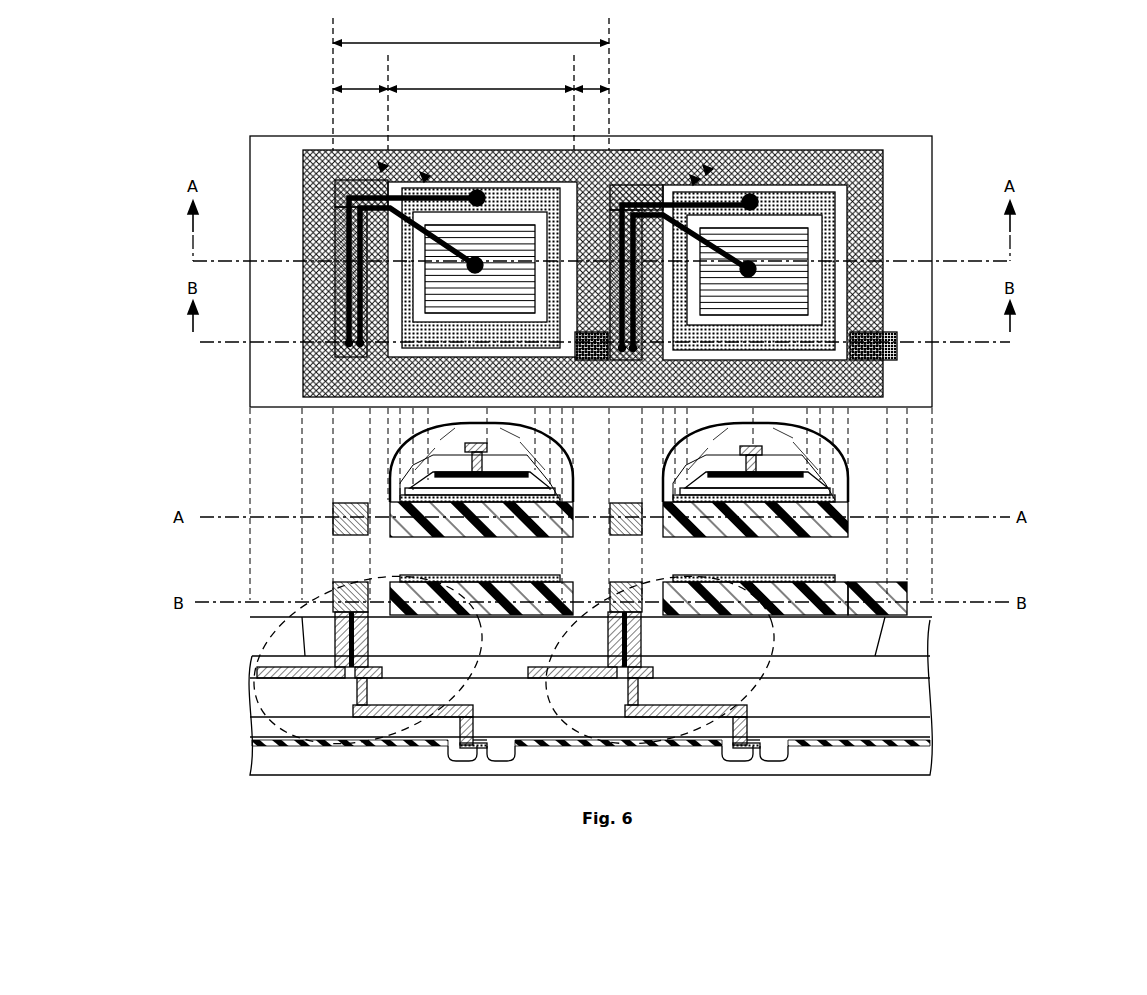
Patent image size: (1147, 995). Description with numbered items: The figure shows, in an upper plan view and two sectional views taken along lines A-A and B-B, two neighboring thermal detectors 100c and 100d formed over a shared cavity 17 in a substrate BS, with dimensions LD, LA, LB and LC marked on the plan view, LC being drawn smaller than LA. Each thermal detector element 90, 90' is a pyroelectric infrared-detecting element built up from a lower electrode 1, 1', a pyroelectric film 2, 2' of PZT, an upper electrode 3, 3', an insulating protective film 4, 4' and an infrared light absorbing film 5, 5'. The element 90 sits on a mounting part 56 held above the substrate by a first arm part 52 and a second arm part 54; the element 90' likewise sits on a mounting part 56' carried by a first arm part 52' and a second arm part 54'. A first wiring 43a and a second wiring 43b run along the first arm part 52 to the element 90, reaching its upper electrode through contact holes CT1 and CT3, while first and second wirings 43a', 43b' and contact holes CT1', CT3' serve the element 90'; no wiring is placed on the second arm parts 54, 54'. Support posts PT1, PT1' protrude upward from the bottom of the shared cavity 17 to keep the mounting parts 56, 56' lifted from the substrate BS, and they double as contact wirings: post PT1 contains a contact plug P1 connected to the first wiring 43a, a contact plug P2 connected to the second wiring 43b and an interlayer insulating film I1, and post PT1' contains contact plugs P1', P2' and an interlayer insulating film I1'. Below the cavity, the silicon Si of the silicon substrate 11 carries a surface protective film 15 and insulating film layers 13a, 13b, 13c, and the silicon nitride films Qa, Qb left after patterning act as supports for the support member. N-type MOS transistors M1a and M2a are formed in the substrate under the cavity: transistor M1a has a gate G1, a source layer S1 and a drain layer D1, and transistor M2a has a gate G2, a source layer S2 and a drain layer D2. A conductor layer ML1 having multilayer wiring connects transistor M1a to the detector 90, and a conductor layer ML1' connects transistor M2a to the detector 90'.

The substrate BS is at (853, 140).
The first arm part 52 is at (572, 273).
The mounting part 56 is at (388, 419).
The mounting part 56' is at (838, 395).
The first wiring 43a is at (323, 359).
The second wiring 43b is at (313, 409).
The first wiring 43a' is at (620, 371).
The second wiring 43b' is at (610, 411).
The second arm part 54 is at (591, 391).
The second arm part 54' is at (927, 462).
The support post PT1 is at (311, 432).
The support post PT1' is at (679, 436).
The contact hole CT1 is at (470, 156).
The contact hole CT3 is at (545, 293).
The contact hole CT1' is at (745, 158).
The contact hole CT3' is at (720, 293).
The thermal detector 100c is at (380, 165).
The thermal detector 100d is at (706, 168).
The thermal detector element 90 is at (355, 132).
The thermal detector element 90' is at (682, 135).
The first arm part 52' is at (638, 131).
The shared cavity 17 is at (912, 138).
The infrared light absorbing film 5 is at (394, 457).
The insulating film 4 is at (372, 454).
The upper electrode 3 is at (383, 471).
The pyroelectric film 2 is at (385, 482).
The lower electrode 1 is at (386, 535).
The infrared light absorbing film 5' is at (828, 456).
The insulating film 4' is at (850, 454).
The upper electrode 3' is at (839, 471).
The pyroelectric film 2' is at (836, 482).
The lower electrode 1' is at (833, 535).
The lead zirconate titanate PZT is at (480, 481).
The silicon substrate 11 is at (930, 762).
The first interlayer insulating film 13a is at (930, 727).
The second interlayer insulating film 13b is at (930, 692).
The third interlayer insulating film 13c is at (930, 668).
The surface protective film 15 is at (930, 745).
The silicon Si is at (560, 766).
The contact plug P1 is at (301, 656).
The contact plug P2 is at (384, 666).
The contact plug P1' is at (572, 656).
The contact plug P2' is at (660, 666).
The interlayer insulating film I1 is at (398, 697).
The interlayer insulating film I1' is at (670, 697).
The gate G1 is at (478, 732).
The N-type MOS transistor M1a is at (500, 729).
The source layer S1 is at (457, 759).
The drain layer D1 is at (512, 760).
The gate G2 is at (752, 732).
The N-type MOS transistor M2a is at (775, 729).
The source layer S2 is at (730, 759).
The drain layer D2 is at (785, 760).
The silicon nitride film Qa is at (282, 628).
The silicon nitride film Qb is at (860, 636).
The conductor layer ML1 is at (204, 693).
The conductor layer ML1' is at (829, 692).
The cell pitch dimension LD is at (471, 32).
The wiring width dimension LA is at (360, 78).
The capacitor width dimension LB is at (481, 77).
The gap dimension LC is at (610, 70).